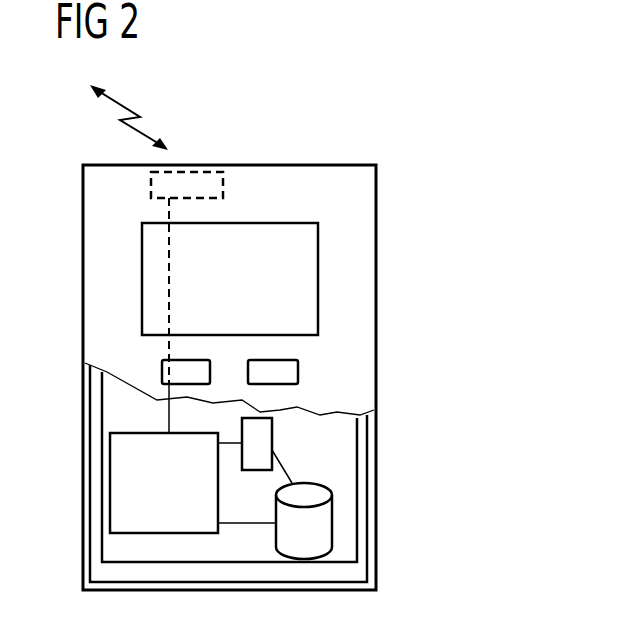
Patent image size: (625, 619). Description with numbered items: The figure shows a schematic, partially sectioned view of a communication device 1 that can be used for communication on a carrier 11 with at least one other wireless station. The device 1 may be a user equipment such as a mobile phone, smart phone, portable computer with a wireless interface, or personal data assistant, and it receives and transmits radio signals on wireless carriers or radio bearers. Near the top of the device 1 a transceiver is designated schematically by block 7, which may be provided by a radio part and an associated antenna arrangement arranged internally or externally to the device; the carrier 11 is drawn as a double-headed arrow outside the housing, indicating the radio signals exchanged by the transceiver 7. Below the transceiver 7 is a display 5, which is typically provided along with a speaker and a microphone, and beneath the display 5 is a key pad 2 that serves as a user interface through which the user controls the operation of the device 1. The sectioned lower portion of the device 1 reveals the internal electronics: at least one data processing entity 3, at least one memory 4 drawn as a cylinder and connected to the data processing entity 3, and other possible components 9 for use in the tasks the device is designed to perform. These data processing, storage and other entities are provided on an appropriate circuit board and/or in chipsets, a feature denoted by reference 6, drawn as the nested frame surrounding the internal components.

The communication device 1 is at (285, 165).
The key pad 2 is at (162, 372).
The data processing entity 3 is at (110, 482).
The memory 4 is at (332, 520).
The display 5 is at (318, 280).
The circuit board 6 is at (112, 550).
The transceiver 7 is at (223, 187).
The other components 9 is at (272, 432).
The carrier 11 is at (118, 104).